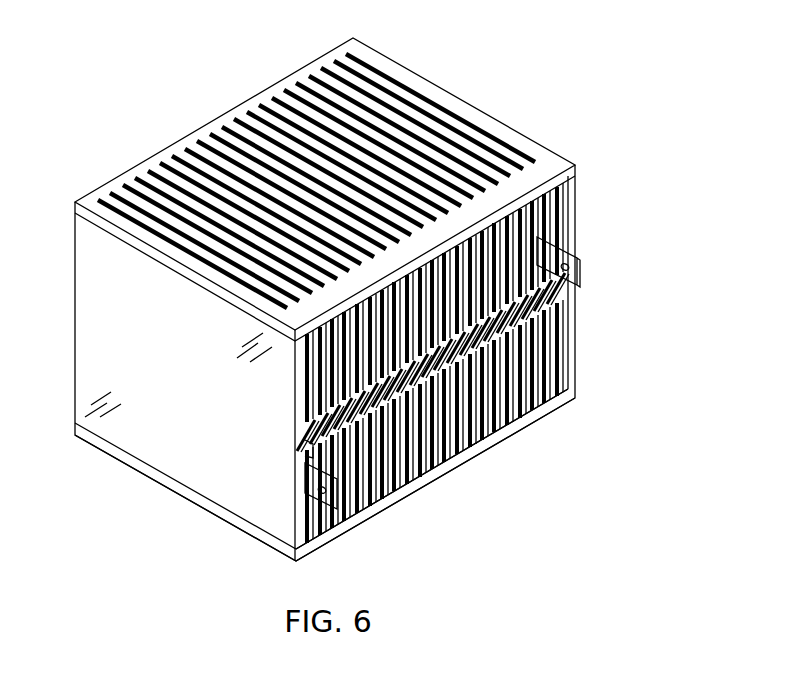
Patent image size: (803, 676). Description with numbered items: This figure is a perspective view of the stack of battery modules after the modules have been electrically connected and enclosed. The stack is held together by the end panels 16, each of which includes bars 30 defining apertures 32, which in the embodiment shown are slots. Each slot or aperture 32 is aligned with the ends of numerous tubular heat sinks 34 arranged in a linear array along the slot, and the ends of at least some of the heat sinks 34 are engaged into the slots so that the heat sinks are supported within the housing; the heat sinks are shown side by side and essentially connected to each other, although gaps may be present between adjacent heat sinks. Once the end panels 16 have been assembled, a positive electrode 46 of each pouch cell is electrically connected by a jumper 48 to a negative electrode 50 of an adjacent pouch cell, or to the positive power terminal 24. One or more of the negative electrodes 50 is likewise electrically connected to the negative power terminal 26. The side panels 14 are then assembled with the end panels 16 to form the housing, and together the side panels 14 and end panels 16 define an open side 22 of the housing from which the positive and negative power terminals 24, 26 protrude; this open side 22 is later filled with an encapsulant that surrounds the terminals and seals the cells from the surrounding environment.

The side panel 14 is at (126, 325).
The end panel 16 is at (237, 300).
The open side 22 is at (452, 452).
The positive power terminal 24 is at (318, 495).
The negative power terminal 26 is at (578, 258).
The bar 30 is at (307, 181).
The aperture 32 is at (140, 172).
The tubular heat sink 34 is at (160, 168).
The positive electrode 46 is at (306, 453).
The jumper 48 is at (316, 440).
The negative electrode 50 is at (548, 220).